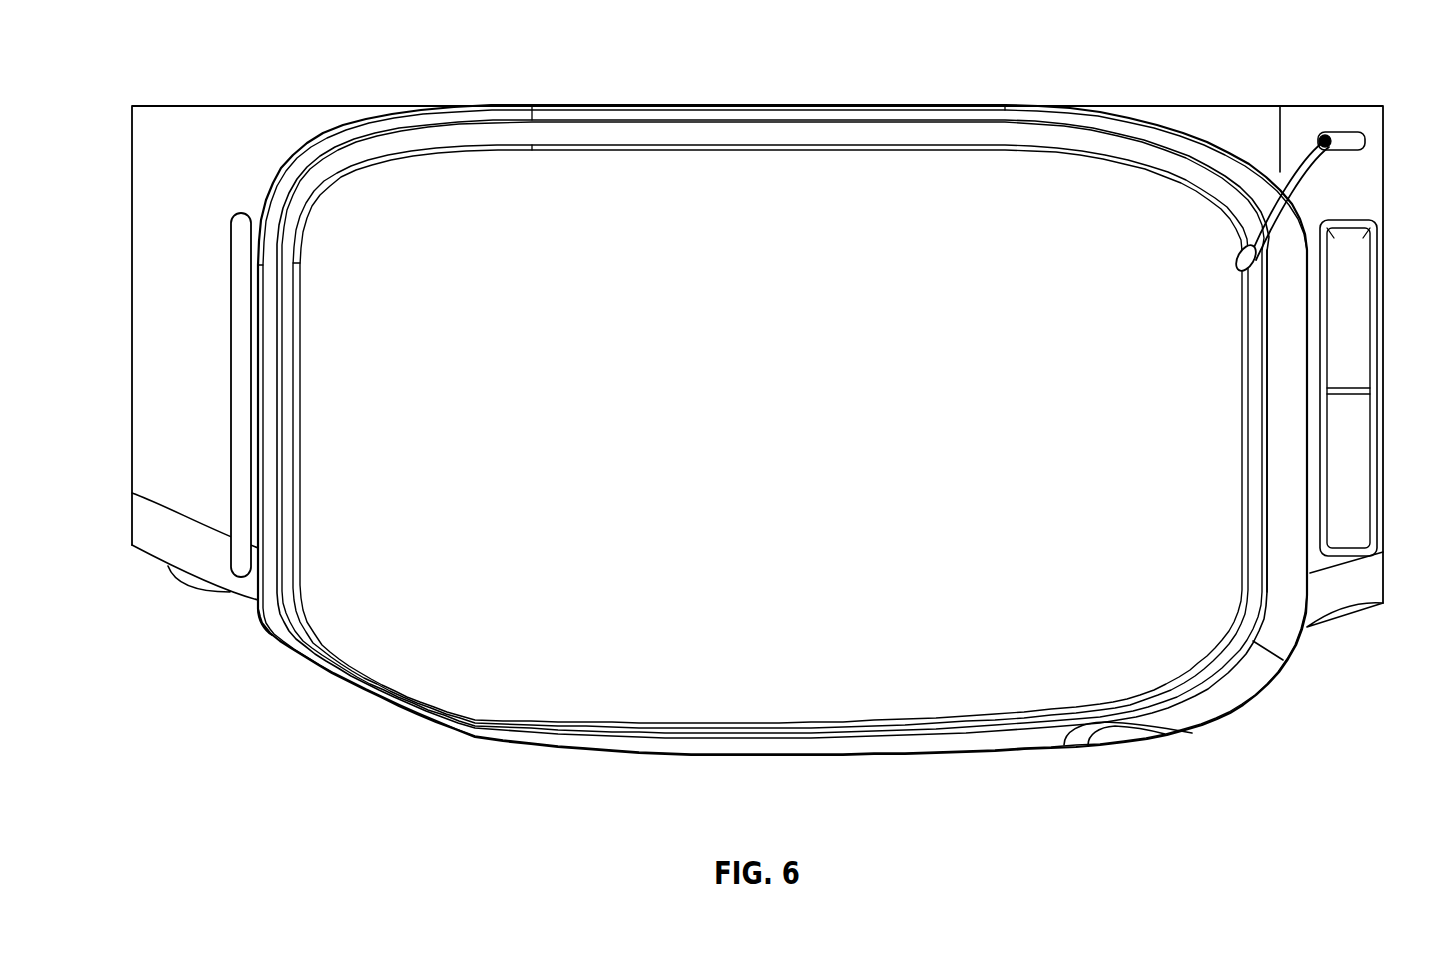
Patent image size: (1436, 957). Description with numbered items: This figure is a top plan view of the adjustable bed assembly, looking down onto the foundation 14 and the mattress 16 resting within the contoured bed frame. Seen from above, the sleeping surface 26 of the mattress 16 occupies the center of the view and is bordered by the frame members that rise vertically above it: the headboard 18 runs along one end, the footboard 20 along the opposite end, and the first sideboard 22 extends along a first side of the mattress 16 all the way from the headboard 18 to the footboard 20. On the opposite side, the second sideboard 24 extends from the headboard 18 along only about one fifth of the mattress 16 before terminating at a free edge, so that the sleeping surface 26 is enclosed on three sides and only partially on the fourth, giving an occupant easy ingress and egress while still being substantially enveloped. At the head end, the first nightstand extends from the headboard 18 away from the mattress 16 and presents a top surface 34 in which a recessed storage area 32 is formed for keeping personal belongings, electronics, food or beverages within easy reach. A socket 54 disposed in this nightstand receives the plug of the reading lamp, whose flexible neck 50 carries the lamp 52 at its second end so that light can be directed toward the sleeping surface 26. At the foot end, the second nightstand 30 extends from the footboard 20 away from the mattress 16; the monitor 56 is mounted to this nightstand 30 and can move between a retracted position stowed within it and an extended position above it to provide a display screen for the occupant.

The foundation 14 is at (800, 748).
The mattress 16 is at (616, 730).
The headboard 18 is at (1292, 612).
The footboard 20 is at (262, 622).
The first sideboard 22 is at (763, 132).
The second sideboard 24 is at (1172, 720).
The sleeping surface 26 is at (742, 447).
The second nightstand 30 is at (142, 366).
The recessed storage area 32 is at (1358, 365).
The top surface 34 is at (1365, 211).
The flexible neck 50 is at (1280, 172).
The lamp 52 is at (1240, 248).
The socket 54 is at (1326, 134).
The monitor 56 is at (237, 212).